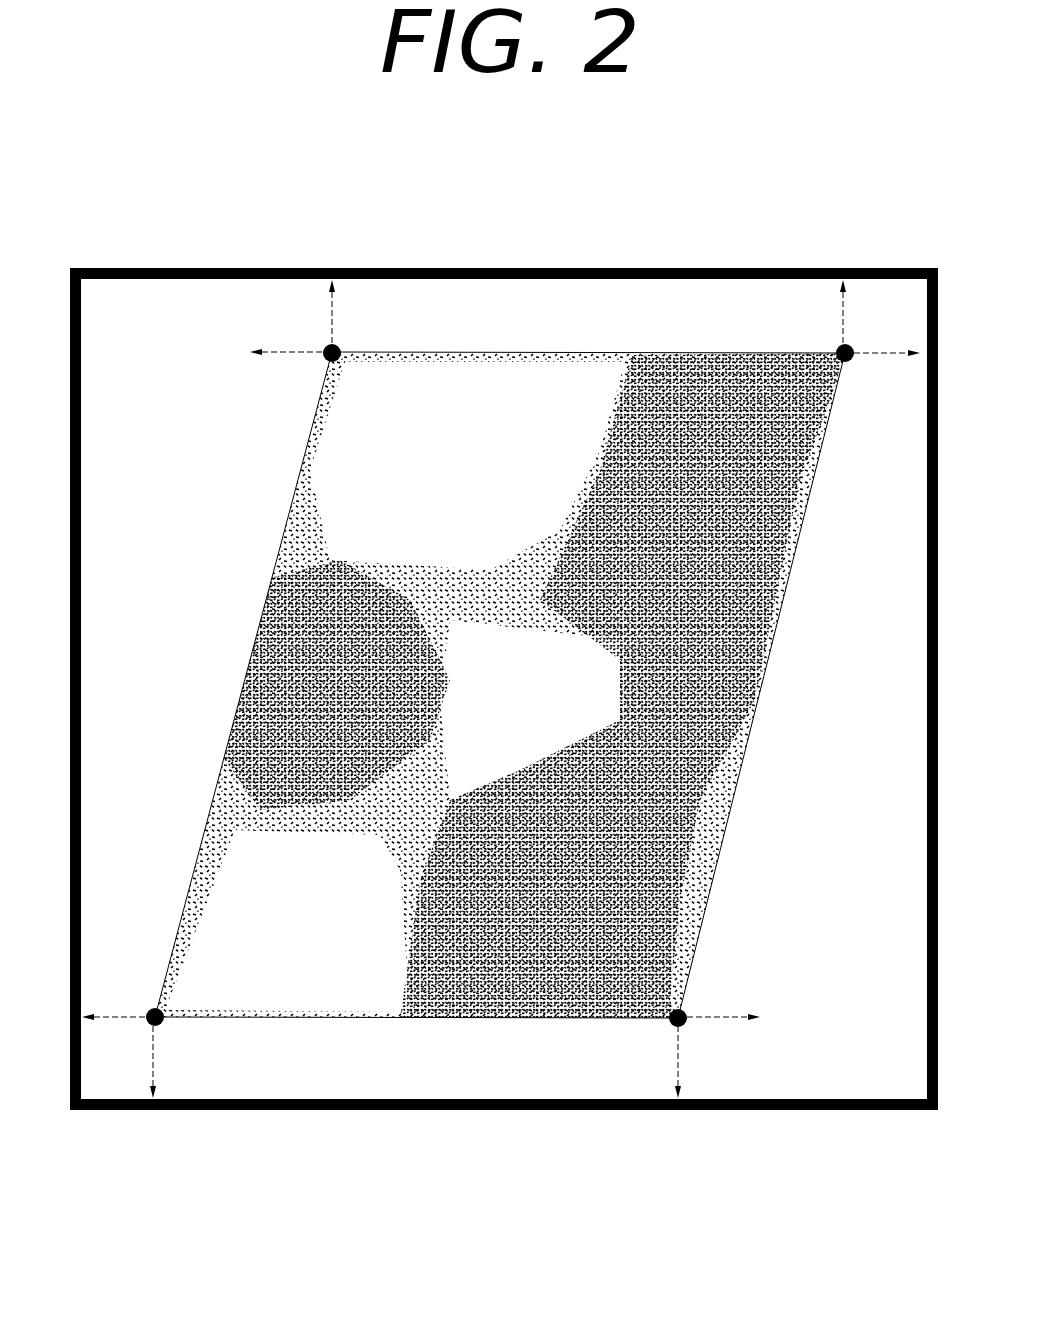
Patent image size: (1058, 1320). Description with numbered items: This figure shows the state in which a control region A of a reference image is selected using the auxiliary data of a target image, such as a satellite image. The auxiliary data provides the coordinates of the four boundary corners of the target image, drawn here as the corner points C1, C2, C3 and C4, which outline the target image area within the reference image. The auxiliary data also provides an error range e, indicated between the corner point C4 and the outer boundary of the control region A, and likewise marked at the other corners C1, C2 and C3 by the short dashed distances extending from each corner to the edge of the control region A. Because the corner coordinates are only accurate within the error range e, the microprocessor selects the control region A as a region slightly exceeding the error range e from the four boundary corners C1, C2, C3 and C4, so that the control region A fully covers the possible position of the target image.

The control region A is at (112, 262).
The coordinate of first boundary corner C1 is at (343, 352).
The coordinate of second boundary corner C2 is at (158, 1022).
The coordinate of third boundary corner C3 is at (672, 1023).
The coordinate of fourth boundary corner C4 is at (840, 350).
The error range e is at (887, 383).